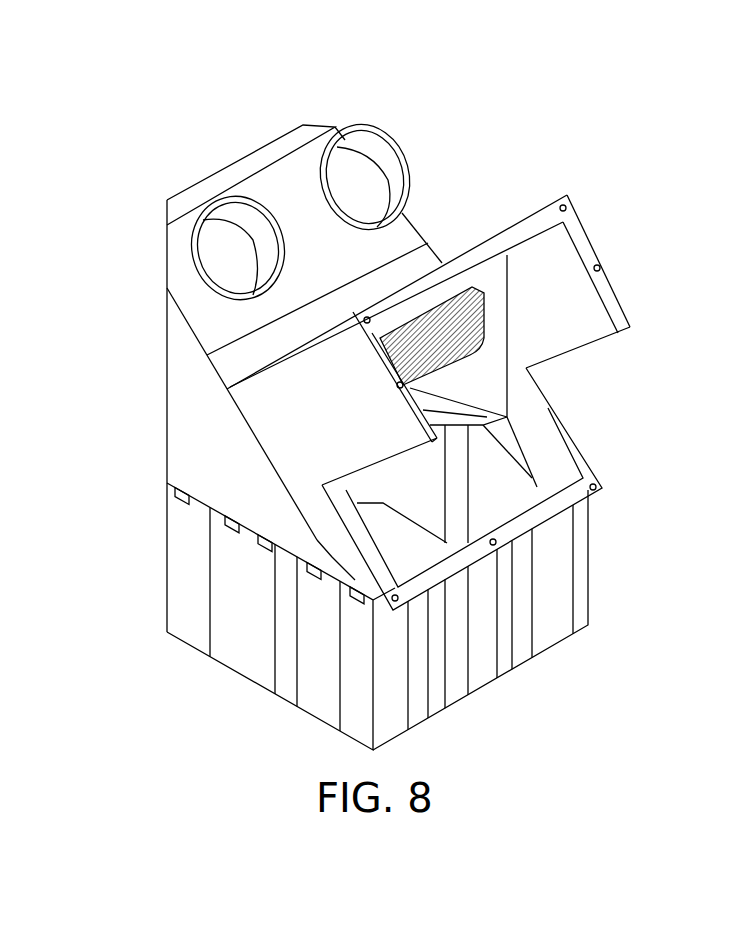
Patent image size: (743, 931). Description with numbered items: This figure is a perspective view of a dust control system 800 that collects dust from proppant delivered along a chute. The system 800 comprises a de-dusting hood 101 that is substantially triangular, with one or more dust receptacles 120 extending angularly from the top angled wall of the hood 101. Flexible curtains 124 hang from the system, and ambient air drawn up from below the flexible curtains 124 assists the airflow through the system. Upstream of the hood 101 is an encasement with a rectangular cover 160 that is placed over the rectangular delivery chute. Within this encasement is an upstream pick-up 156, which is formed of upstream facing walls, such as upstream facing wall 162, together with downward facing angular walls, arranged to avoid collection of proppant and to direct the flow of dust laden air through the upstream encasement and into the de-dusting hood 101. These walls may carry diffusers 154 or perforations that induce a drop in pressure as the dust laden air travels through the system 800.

The dust control system 800 is at (232, 97).
The de-dusting hood 101 is at (187, 445).
The dust receptacle 120 is at (257, 223).
The flexible curtains 124 is at (583, 590).
The diffusers 154 is at (425, 318).
The upstream pick-up 156 is at (502, 283).
The rectangular cover 160 is at (597, 302).
The upstream facing wall 162 is at (487, 382).